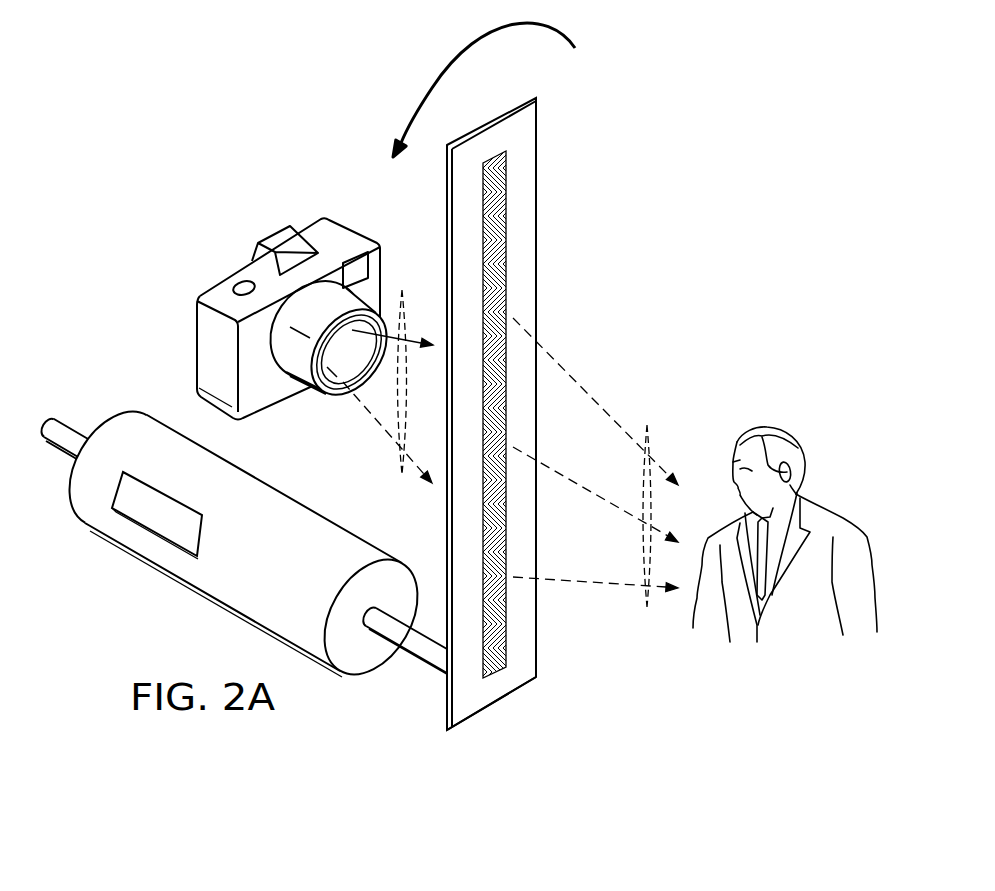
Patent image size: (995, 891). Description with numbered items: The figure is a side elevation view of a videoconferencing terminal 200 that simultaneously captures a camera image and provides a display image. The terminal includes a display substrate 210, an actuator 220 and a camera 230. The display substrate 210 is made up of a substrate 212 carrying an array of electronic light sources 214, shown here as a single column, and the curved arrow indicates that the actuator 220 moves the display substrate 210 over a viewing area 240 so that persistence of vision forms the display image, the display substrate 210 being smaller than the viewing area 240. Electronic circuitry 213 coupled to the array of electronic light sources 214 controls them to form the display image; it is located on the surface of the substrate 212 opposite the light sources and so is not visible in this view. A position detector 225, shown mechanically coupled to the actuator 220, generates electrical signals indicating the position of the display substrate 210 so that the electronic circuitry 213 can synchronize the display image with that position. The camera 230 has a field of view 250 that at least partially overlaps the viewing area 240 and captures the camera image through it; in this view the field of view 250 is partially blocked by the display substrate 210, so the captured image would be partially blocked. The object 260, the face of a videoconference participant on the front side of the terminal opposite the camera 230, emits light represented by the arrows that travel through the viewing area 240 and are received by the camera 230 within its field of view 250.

The videoconferencing terminal 200 is at (173, 62).
The display substrate 210 is at (505, 430).
The substrate 212 is at (495, 706).
The electronic circuitry 213 is at (447, 546).
The array of electronic light sources 214 is at (507, 193).
The actuator 220 is at (114, 428).
The position detector 225 is at (145, 520).
The camera 230 is at (224, 275).
The viewing area 240 is at (648, 425).
The field of view 250 is at (403, 318).
The object 260 is at (772, 427).